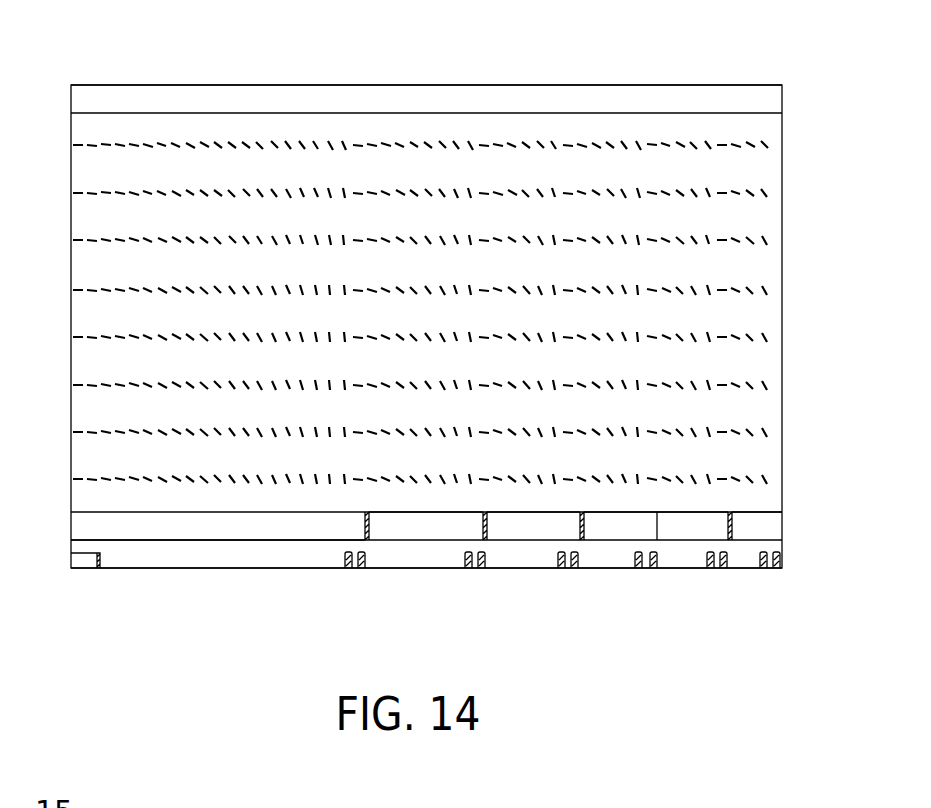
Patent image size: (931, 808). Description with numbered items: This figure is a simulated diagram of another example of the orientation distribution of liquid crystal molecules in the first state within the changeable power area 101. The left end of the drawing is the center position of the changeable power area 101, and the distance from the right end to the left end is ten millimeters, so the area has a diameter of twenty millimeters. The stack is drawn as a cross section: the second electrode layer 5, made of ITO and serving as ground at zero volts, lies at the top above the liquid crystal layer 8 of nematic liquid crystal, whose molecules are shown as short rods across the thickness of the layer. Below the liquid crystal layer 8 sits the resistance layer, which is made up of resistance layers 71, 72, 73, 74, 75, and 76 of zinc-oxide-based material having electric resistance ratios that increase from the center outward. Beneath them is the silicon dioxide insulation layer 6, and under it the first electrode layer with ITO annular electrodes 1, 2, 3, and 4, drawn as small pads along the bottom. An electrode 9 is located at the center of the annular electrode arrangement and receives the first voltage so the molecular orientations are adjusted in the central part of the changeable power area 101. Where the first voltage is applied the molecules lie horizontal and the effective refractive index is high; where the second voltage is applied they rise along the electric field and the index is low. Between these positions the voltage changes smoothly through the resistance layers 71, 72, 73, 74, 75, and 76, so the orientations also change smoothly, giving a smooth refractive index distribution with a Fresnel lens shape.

The changeable power area 101 is at (58, 46).
The second electrode layer 5 is at (625, 86).
The liquid crystal layer 8 is at (697, 113).
The insulation layer 6 is at (170, 570).
The electrode 9 is at (80, 570).
The resistance layer 71 is at (126, 543).
The resistance layer 72 is at (425, 542).
The resistance layer 73 is at (528, 542).
The resistance layer 74 is at (625, 512).
The resistance layer 75 is at (695, 512).
The resistance layer 76 is at (775, 512).
The annular electrode 1 is at (482, 570).
The annular electrode 2 is at (468, 570).
The annular electrode 3 is at (360, 570).
The annular electrode 4 is at (345, 570).